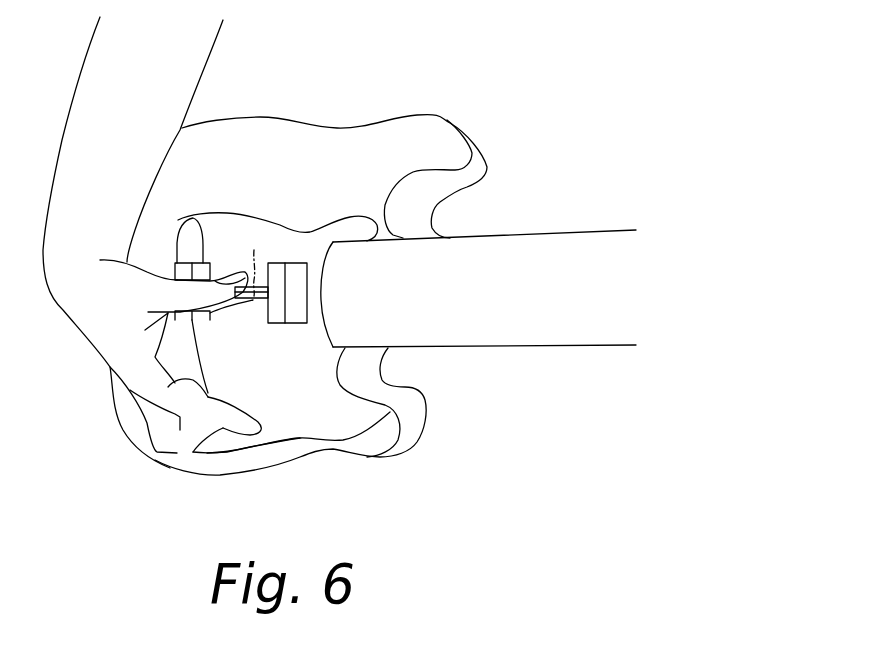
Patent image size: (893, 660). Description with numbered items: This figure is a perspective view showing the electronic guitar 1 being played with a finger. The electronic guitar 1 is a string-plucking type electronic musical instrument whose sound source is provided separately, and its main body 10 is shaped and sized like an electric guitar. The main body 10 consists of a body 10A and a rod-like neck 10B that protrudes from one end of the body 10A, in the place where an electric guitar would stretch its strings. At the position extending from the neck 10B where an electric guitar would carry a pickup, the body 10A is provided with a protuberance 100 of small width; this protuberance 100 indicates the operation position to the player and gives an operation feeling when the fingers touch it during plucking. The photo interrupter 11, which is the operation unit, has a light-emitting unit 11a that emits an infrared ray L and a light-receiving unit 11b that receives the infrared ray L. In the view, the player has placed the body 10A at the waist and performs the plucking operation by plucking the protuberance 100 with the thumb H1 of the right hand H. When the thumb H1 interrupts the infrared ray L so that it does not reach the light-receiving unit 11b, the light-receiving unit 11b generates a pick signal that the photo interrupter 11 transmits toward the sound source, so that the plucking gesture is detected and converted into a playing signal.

The electronic guitar 1 is at (530, 77).
The main body 10 is at (321, 259).
The body 10A is at (418, 115).
The neck 10B is at (583, 228).
The photo interrupter 11 is at (345, 293).
The light-emitting unit 11a is at (297, 293).
The light-receiving unit 11b is at (195, 232).
The protuberance 100 is at (253, 300).
The right hand H is at (82, 333).
The thumb H1 is at (233, 311).
The infrared ray L is at (256, 259).